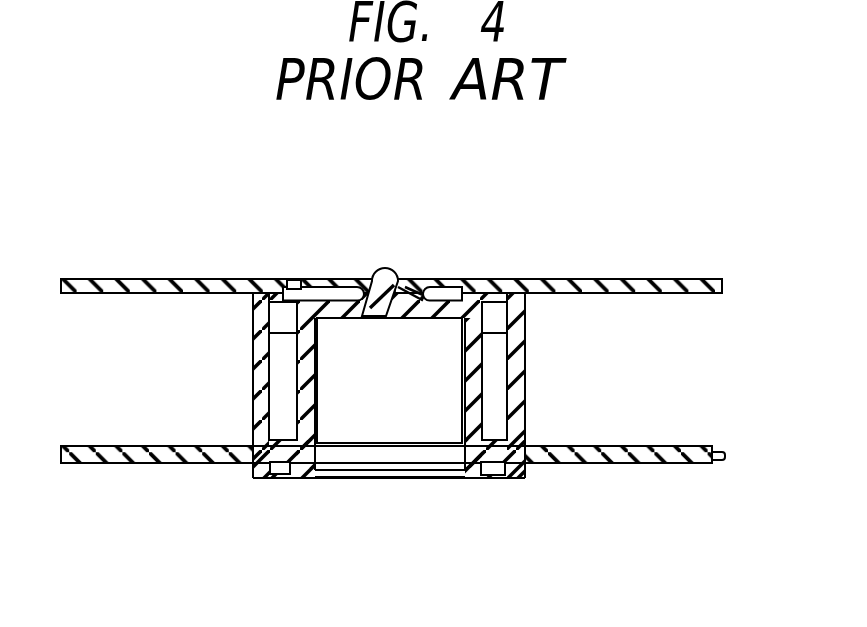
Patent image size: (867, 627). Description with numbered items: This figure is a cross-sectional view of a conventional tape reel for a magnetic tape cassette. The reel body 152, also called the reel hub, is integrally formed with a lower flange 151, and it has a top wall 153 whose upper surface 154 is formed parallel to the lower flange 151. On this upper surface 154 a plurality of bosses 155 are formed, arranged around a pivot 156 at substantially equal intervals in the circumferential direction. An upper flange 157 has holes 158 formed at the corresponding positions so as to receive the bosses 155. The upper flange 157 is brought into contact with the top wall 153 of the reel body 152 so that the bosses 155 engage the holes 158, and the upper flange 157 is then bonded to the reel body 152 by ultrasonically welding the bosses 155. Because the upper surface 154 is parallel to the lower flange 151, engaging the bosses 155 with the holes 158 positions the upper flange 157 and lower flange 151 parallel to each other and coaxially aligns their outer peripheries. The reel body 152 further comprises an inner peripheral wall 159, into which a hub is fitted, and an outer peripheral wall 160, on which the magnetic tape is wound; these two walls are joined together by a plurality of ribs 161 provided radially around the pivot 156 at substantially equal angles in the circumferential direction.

The lower flange 151 is at (637, 463).
The reel body 152 is at (396, 363).
The top wall 153 is at (328, 312).
The upper surface 154 is at (426, 288).
The bosses 155 is at (342, 285).
The pivot 156 is at (398, 272).
The upper flange 157 is at (605, 282).
The holes 158 is at (301, 280).
The inner peripheral wall 159 is at (312, 403).
The outer peripheral wall 160 is at (262, 348).
The ribs 161 is at (282, 383).